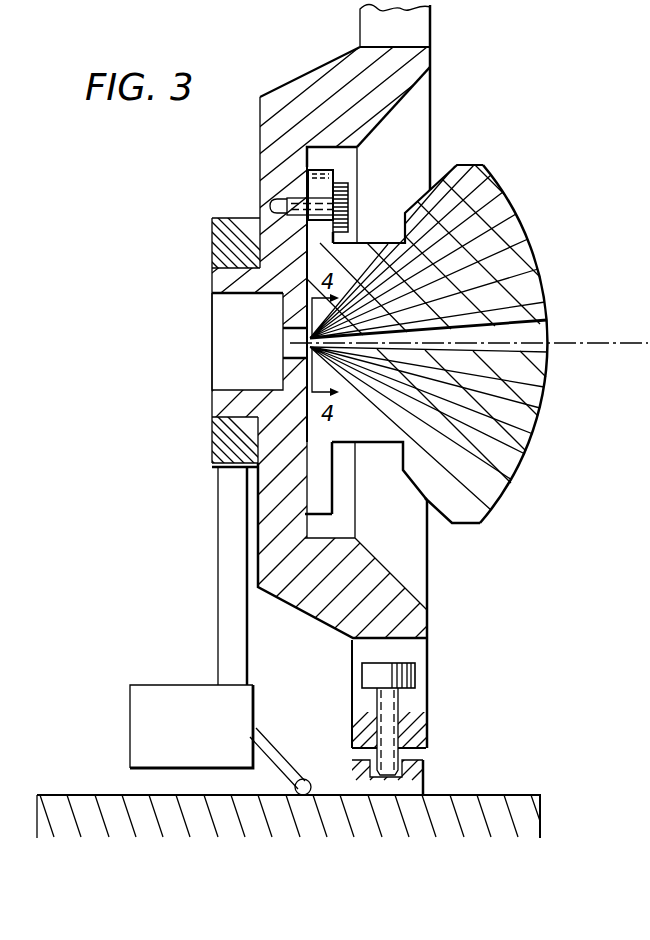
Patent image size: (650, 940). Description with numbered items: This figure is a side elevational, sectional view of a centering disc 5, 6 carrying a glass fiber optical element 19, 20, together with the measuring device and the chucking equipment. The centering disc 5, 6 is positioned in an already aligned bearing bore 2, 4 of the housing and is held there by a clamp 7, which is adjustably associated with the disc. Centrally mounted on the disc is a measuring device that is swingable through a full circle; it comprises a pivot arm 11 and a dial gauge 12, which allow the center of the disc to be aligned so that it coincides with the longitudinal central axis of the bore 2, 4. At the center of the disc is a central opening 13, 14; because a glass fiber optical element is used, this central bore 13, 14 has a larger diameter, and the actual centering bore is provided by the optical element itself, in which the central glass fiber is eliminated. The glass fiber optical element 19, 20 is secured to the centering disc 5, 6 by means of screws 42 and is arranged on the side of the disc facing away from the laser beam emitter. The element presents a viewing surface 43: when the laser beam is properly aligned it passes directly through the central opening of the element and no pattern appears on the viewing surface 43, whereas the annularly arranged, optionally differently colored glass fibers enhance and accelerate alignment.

The bearing bore 2 is at (328, 796).
The bearing bore 4 is at (538, 791).
The centering disc 5 is at (325, 397).
The centering disc 6 is at (289, 95).
The clamp 7 is at (388, 703).
The pivot arm 11 is at (220, 533).
The dial gauge 12 is at (156, 712).
The central opening 13 is at (208, 341).
The central opening 14 is at (283, 342).
The glass fiber optical element 19 is at (435, 457).
The glass fiber optical element 20 is at (495, 490).
The screw 42 is at (348, 208).
The viewing surface 43 is at (450, 366).